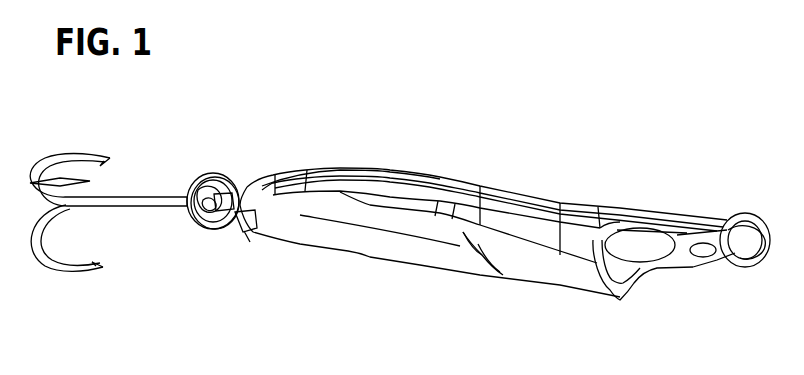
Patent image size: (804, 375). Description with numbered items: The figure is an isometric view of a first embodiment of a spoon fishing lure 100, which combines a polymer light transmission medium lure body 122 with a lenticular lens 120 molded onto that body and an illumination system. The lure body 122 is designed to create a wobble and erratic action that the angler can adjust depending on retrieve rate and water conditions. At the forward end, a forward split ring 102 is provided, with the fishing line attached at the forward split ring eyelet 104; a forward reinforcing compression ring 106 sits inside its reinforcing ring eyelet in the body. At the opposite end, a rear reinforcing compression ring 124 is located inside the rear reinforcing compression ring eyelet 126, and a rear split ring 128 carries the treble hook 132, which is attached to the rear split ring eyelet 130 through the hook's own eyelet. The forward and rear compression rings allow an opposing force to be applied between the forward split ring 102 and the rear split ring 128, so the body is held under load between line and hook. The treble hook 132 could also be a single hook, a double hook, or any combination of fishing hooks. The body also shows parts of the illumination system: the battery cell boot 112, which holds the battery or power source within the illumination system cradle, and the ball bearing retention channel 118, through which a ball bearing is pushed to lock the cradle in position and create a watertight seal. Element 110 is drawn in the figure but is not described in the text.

The spoon fishing lure 100 is at (473, 166).
The forward split ring 102 is at (743, 268).
The forward split ring eyelet 104 is at (745, 228).
The forward reinforcing compression ring 106 is at (703, 256).
The head portion 110 is at (648, 253).
The battery cell boot 112 is at (623, 255).
The ball bearing retention channel 118 is at (487, 256).
The lenticular lens 120 is at (376, 168).
The polymer light transmission medium lure body 122 is at (348, 226).
The rear reinforcing compression ring 124 is at (250, 240).
The rear reinforcing compression ring eyelet 126 is at (236, 214).
The rear split ring 128 is at (205, 220).
The rear split ring eyelet 130 is at (208, 190).
The treble hook 132 is at (57, 264).